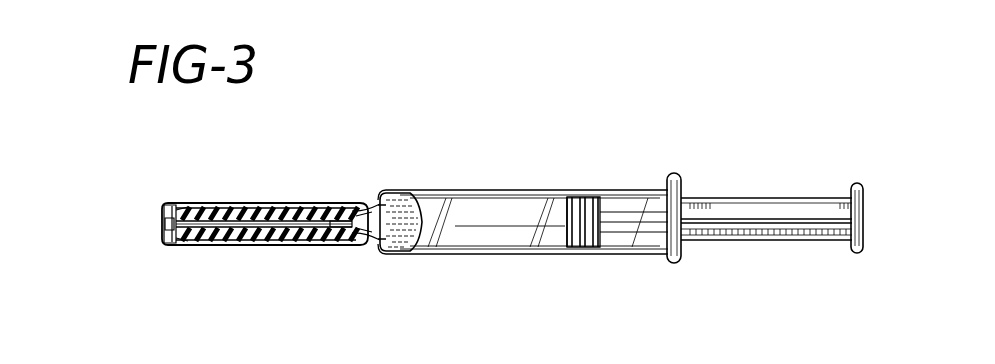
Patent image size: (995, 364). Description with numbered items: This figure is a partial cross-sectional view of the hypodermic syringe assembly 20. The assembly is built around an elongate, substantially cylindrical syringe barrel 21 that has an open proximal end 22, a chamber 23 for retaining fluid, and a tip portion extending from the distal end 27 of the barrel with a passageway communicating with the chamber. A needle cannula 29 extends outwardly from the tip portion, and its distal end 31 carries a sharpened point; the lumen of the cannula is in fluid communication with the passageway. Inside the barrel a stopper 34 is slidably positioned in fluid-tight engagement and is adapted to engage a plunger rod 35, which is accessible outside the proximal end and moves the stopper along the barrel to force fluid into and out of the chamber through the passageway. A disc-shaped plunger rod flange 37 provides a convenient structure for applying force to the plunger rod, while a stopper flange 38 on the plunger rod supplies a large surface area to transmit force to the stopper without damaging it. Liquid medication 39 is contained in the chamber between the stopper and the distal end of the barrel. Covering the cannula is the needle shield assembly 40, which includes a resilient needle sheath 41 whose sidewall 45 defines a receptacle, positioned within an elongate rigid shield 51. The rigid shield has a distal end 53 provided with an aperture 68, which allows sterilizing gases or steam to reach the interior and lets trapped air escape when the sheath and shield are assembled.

The hypodermic syringe assembly 20 is at (687, 132).
The syringe barrel 21 is at (522, 256).
The open proximal end 22 is at (681, 247).
The chamber 23 is at (400, 252).
The distal end 27 is at (378, 250).
The needle cannula 29 is at (263, 233).
The distal end 31 is at (197, 244).
The stopper 34 is at (556, 186).
The plunger rod 35 is at (776, 192).
The plunger rod flange 37 is at (856, 255).
The stopper flange 38 is at (618, 189).
The liquid medication 39 is at (388, 198).
The needle shield assembly 40 is at (213, 203).
The resilient needle sheath 41 is at (205, 247).
The sidewall 45 is at (250, 207).
The rigid shield 51 is at (185, 203).
The distal end 53 is at (158, 204).
The aperture 68 is at (162, 221).